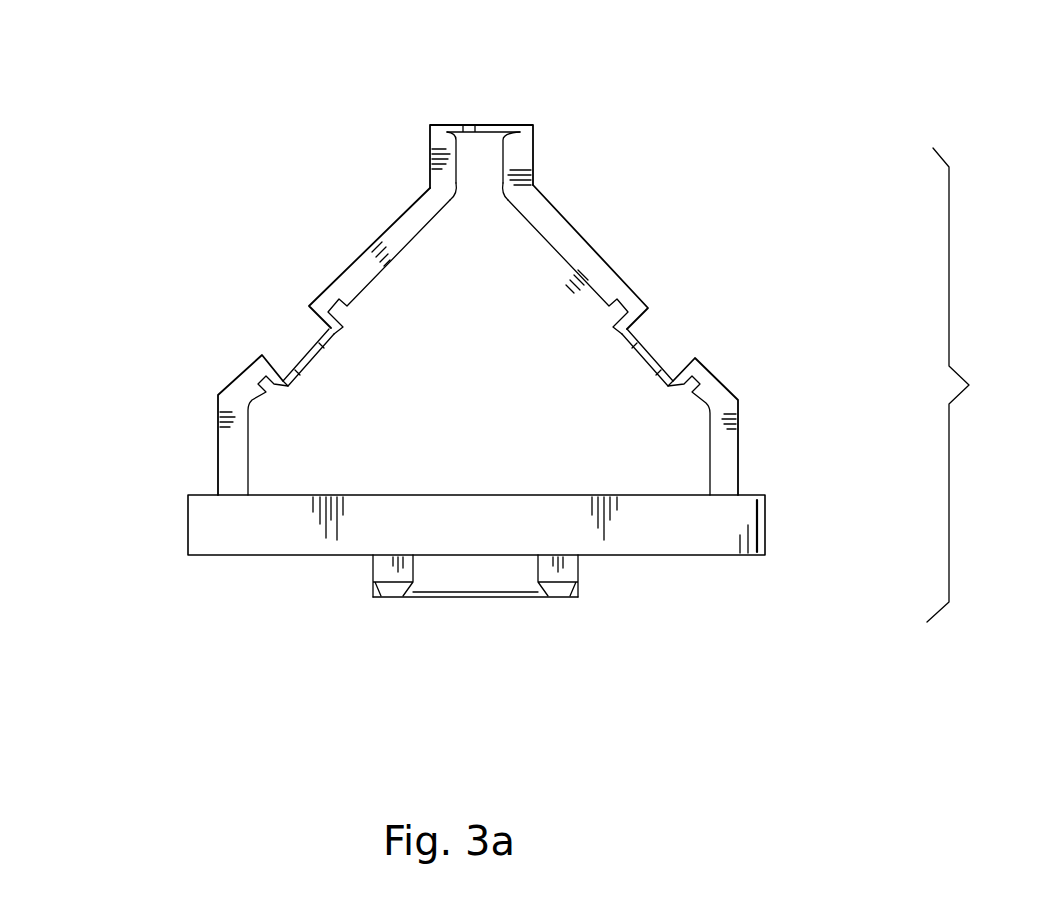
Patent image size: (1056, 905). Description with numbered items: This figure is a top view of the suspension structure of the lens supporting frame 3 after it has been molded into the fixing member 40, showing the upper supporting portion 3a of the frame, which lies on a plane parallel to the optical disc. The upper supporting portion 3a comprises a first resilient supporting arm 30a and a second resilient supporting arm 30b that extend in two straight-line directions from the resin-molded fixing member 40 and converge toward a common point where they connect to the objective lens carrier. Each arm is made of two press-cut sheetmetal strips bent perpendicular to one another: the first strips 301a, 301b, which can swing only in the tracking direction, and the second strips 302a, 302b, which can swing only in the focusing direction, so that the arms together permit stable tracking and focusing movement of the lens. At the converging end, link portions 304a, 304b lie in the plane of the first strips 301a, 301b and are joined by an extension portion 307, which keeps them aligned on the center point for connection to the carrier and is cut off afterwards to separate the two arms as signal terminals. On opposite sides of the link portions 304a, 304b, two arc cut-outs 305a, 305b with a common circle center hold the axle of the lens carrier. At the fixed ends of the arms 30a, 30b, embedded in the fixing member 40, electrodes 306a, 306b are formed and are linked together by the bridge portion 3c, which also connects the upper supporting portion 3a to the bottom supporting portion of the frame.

The lens supporting frame 3 is at (145, 285).
The upper supporting portion 3a is at (975, 385).
The bridge portion 3c is at (498, 602).
The first resilient supporting arm 30a is at (663, 298).
The second resilient supporting arm 30b is at (306, 302).
The first strip 301a is at (408, 223).
The first strip 301b is at (558, 230).
The second strip 302a is at (280, 303).
The second strip 302b is at (650, 352).
The link portion 304a is at (440, 147).
The link portion 304b is at (527, 148).
The arc cut-out 305a is at (455, 193).
The arc cut-out 305b is at (498, 195).
The electrode 306a is at (563, 570).
The electrode 306b is at (393, 570).
The extension portion 307 is at (470, 125).
The fixing member 40 is at (213, 532).